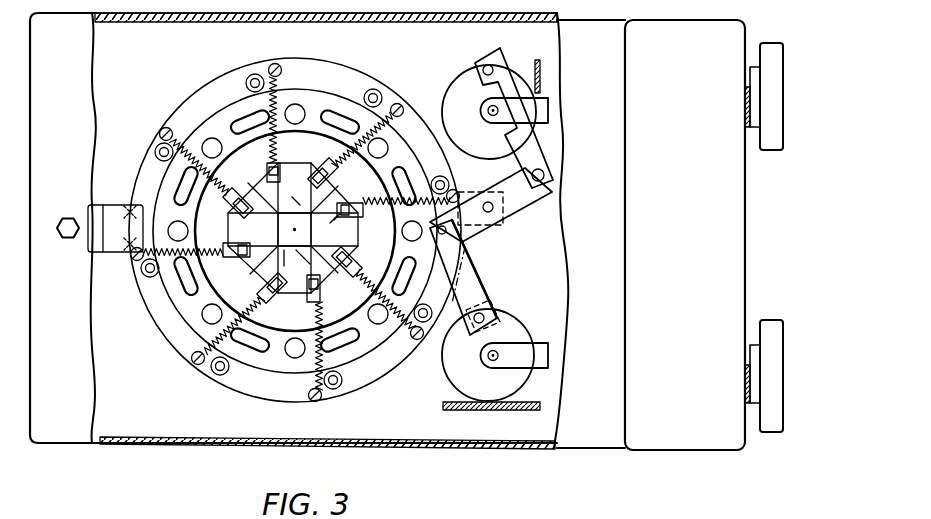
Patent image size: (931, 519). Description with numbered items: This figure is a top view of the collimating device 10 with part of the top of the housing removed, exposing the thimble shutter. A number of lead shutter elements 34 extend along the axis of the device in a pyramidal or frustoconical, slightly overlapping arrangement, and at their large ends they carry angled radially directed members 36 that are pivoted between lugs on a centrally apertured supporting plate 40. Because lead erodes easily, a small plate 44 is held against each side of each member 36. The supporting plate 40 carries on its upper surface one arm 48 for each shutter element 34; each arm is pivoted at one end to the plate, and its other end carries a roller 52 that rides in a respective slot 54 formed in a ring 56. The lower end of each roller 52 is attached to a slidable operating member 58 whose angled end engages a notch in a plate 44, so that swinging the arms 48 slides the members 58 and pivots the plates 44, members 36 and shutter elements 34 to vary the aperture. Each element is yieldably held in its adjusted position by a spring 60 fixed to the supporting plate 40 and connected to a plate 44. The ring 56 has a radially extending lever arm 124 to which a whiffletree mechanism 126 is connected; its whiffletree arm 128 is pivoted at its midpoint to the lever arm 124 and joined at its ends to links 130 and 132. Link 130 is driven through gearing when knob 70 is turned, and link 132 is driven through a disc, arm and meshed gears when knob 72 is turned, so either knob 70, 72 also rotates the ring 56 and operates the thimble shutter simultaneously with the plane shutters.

The device 10 is at (186, 448).
The shutter elements 34 is at (250, 178).
The angled radially directed members 36 is at (293, 220).
The supporting plate 40 is at (300, 75).
The small plate 44 is at (320, 170).
The arms 48 is at (273, 68).
The roller 52 is at (358, 125).
The slot 54 is at (330, 112).
The ring 56 is at (215, 122).
The slidable operating member 58 is at (328, 207).
The spring 60 is at (309, 312).
The knob 70 is at (777, 353).
The knob 72 is at (778, 107).
The lever arm 124 is at (508, 222).
The whiffletree mechanism 126 is at (480, 250).
The whiffletree arm 128 is at (510, 177).
The link 130 is at (460, 318).
The link 132 is at (535, 147).